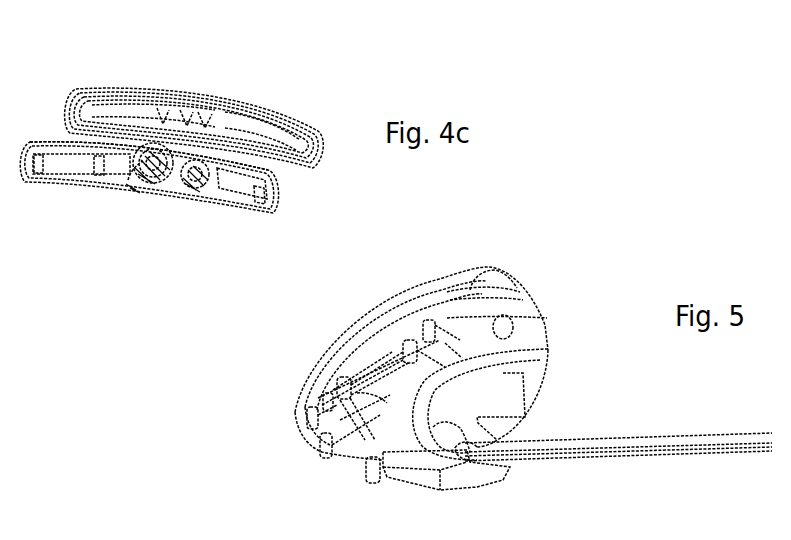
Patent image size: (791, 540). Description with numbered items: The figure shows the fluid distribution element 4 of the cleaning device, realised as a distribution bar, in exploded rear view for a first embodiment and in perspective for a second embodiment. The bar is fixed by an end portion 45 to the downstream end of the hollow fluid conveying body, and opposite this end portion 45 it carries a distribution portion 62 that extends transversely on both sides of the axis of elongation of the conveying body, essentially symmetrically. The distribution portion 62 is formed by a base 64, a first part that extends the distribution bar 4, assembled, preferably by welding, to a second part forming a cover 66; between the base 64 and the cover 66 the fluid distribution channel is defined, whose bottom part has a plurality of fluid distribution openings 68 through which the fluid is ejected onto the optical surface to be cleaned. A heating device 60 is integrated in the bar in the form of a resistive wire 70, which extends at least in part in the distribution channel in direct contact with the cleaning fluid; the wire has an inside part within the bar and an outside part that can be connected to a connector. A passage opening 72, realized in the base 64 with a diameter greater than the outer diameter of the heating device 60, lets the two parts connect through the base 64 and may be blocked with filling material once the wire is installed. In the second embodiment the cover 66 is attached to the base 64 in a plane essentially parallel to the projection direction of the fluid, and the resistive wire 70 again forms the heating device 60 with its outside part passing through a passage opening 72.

In FIG. 4C, the fluid distribution element 4 is at (262, 85).
In FIG. 5, the fluid distribution element 4 is at (256, 410).
In FIG. 4C, the end portion 45 is at (124, 190).
In FIG. 5, the heating device 60 is at (537, 463).
In FIG. 4C, the distribution portion 62 is at (282, 201).
In FIG. 4C, the base 64 is at (149, 156).
In FIG. 5, the base 64 is at (497, 306).
In FIG. 4C, the cover 66 is at (302, 104).
In FIG. 5, the cover 66 is at (333, 356).
In FIG. 5, the fluid distribution openings 68 is at (440, 489).
In FIG. 4C, the resistive wire 70 is at (172, 197).
In FIG. 5, the resistive wire 70 is at (640, 442).
In FIG. 4C, the passage opening 72 is at (216, 196).
In FIG. 5, the passage opening 72 is at (545, 440).